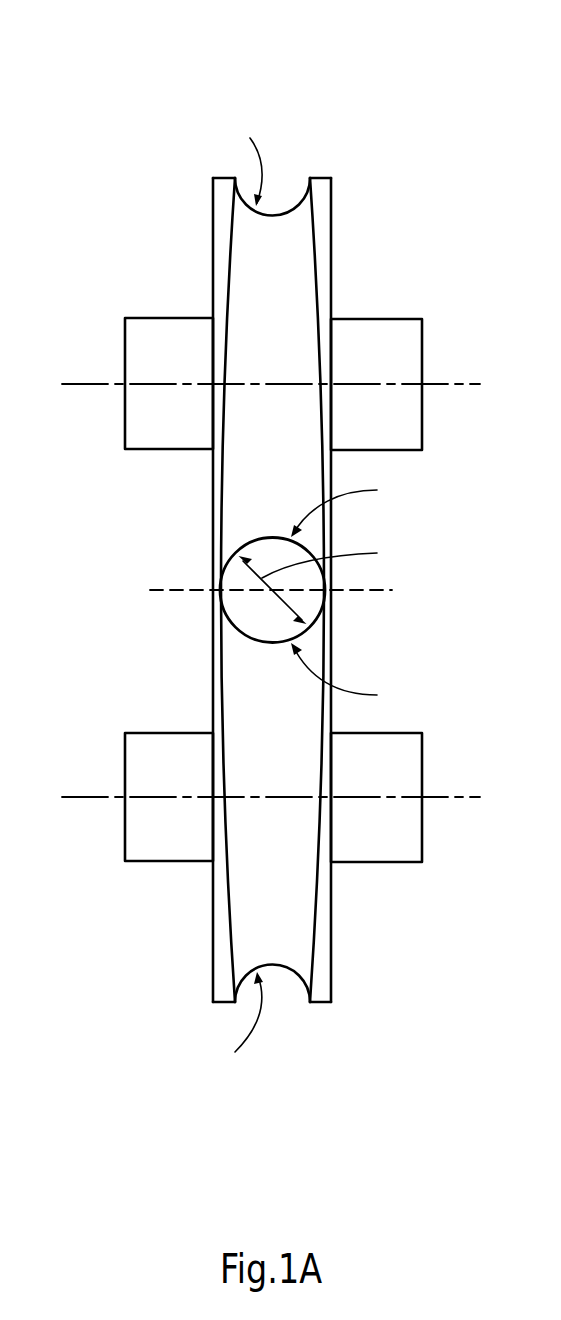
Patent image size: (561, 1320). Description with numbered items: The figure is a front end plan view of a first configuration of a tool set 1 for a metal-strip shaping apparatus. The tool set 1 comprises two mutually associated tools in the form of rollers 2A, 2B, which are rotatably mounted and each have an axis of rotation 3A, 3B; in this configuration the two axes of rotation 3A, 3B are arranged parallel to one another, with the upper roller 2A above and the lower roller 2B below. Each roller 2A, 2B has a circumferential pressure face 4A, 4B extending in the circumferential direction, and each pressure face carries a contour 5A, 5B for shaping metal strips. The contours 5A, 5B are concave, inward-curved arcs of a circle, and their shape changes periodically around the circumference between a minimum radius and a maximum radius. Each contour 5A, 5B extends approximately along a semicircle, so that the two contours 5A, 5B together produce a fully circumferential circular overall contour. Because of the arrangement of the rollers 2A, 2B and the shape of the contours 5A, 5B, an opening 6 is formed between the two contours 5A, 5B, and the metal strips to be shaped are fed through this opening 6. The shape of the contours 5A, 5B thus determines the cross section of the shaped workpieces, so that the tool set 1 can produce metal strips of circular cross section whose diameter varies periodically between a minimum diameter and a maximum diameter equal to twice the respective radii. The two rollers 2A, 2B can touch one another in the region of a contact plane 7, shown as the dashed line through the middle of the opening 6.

The tool set 1 is at (104, 96).
The roller 2A is at (154, 237).
The roller 2B is at (154, 941).
The axis of rotation 3A is at (77, 383).
The axis of rotation 3B is at (73, 795).
The circumferential pressure face 4A is at (290, 253).
The circumferential pressure face 4B is at (290, 928).
The contour 5A is at (292, 206).
The contour 5B is at (292, 975).
The opening 6 is at (242, 615).
The contact plane 7 is at (165, 590).